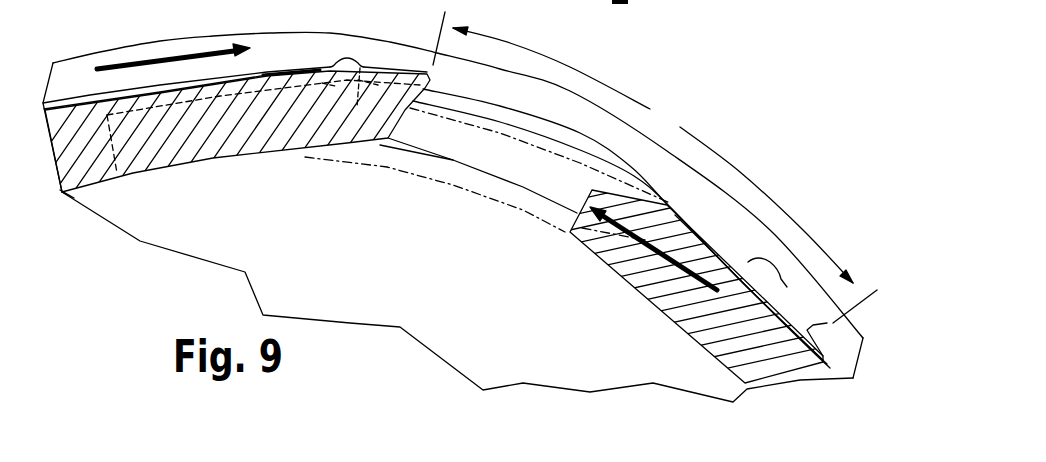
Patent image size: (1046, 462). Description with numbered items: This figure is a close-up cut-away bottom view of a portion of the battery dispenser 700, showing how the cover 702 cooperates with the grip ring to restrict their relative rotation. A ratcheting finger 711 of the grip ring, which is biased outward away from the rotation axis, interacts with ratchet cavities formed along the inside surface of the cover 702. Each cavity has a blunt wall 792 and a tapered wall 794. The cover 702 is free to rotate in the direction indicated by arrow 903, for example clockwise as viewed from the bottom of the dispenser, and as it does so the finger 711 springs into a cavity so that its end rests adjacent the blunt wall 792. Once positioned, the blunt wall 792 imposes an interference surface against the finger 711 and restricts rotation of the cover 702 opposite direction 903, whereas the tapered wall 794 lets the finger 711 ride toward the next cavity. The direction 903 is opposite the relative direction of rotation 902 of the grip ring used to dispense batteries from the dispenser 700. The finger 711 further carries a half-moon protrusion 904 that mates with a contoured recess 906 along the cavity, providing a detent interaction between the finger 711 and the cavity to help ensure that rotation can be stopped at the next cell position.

The dispenser 700 is at (790, 144).
The cover 702 is at (103, 49).
The finger 711 is at (282, 105).
The blunt wall 792 is at (428, 72).
The tapered wall 794 is at (297, 68).
The relative direction of rotation of the grip ring 902 is at (663, 250).
The arrow indicating direction of rotation of the cover 903 is at (160, 53).
The half-moon protrusion 904 is at (358, 68).
The contoured recess 906 is at (333, 63).